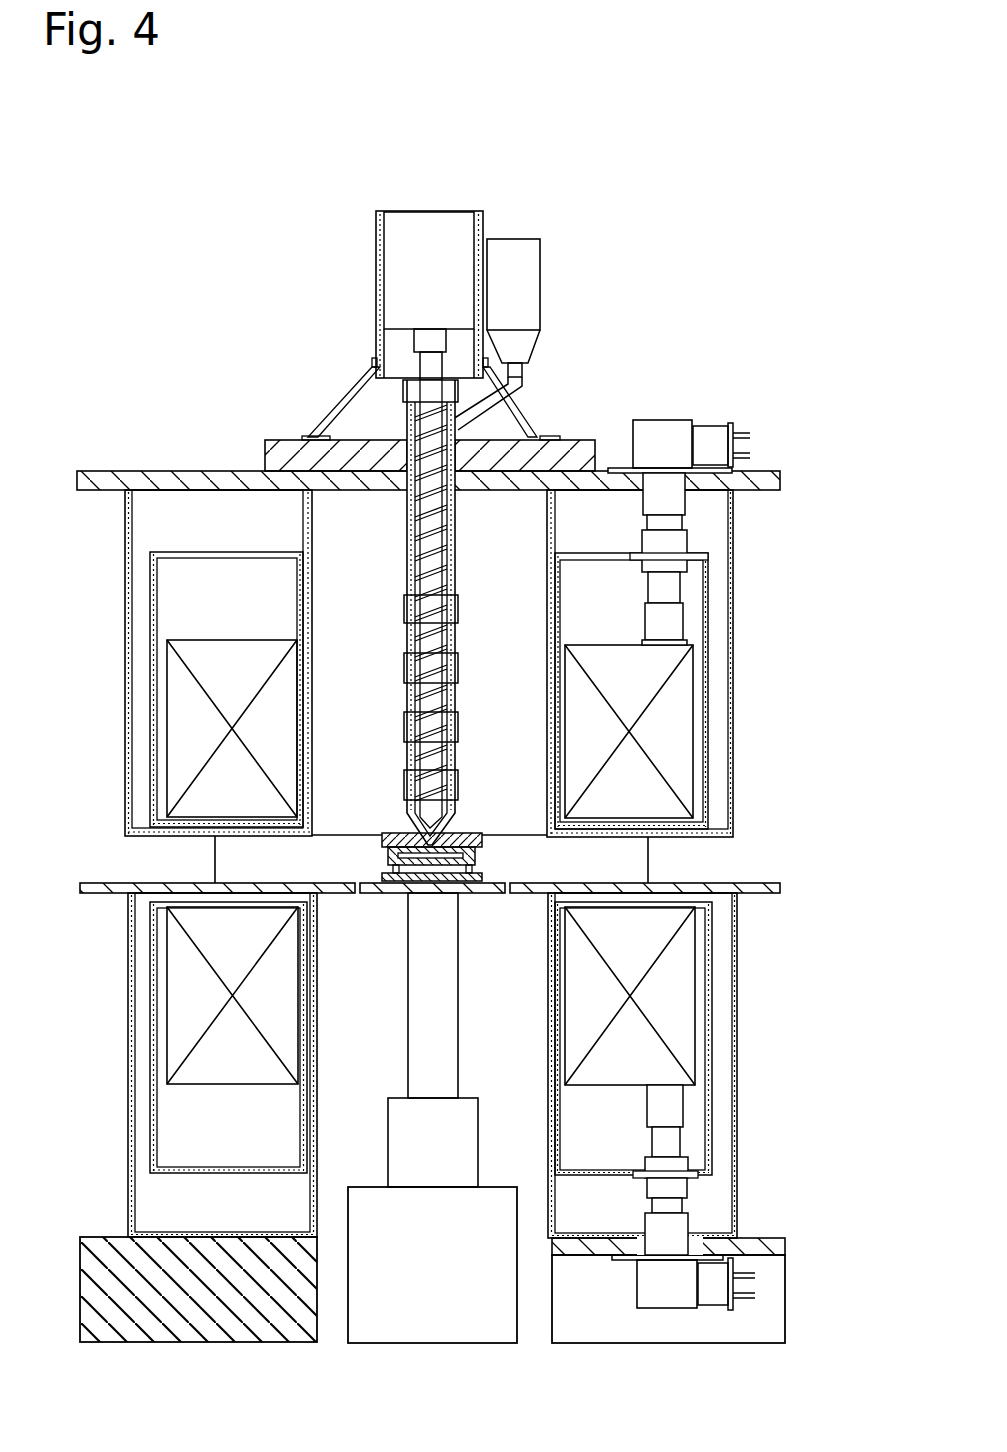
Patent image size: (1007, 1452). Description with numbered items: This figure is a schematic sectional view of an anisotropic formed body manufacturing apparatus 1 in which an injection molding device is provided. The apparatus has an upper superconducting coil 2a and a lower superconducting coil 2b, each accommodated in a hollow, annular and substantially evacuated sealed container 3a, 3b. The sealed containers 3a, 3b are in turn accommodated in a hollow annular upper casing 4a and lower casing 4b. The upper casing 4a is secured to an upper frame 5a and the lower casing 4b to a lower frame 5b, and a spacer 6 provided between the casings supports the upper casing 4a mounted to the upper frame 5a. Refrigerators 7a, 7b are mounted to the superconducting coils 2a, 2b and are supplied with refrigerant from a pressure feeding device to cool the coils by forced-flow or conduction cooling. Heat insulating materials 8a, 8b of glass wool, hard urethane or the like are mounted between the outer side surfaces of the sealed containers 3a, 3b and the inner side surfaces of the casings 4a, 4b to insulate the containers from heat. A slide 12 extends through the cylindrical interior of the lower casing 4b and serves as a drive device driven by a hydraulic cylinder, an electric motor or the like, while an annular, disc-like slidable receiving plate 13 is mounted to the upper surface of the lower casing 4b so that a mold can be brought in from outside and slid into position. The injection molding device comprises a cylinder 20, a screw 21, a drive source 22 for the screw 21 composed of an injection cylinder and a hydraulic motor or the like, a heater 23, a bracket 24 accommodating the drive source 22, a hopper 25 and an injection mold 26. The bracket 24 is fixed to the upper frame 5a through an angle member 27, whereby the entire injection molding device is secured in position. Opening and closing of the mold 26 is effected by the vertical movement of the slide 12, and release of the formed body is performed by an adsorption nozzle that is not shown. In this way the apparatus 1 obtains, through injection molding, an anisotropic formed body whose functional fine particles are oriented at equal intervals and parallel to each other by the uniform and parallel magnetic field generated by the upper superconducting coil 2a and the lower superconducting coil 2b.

The anisotropic formed body manufacturing apparatus 1 is at (664, 376).
The upper superconducting coil 2a is at (695, 762).
The lower superconducting coil 2b is at (705, 975).
The sealed container 3a is at (708, 712).
The sealed container 3b is at (712, 1027).
The upper casing 4a is at (733, 663).
The lower casing 4b is at (737, 1075).
The upper frame 5a is at (237, 470).
The lower frame 5b is at (105, 1237).
The spacer 6 is at (343, 835).
The refrigerator 7a is at (685, 585).
The refrigerator 7b is at (683, 1145).
The heat insulating material 8a is at (557, 528).
The heat insulating material 8b is at (557, 1207).
The slide 12 is at (460, 993).
The slidable receiving plate 13 is at (90, 893).
The cylinder 20 is at (455, 762).
The screw 21 is at (460, 827).
The drive source 22 is at (376, 343).
The heater 23 is at (404, 601).
The bracket 24 is at (378, 289).
The hopper 25 is at (540, 280).
The injection mold 26 is at (477, 863).
The angle member 27 is at (522, 412).